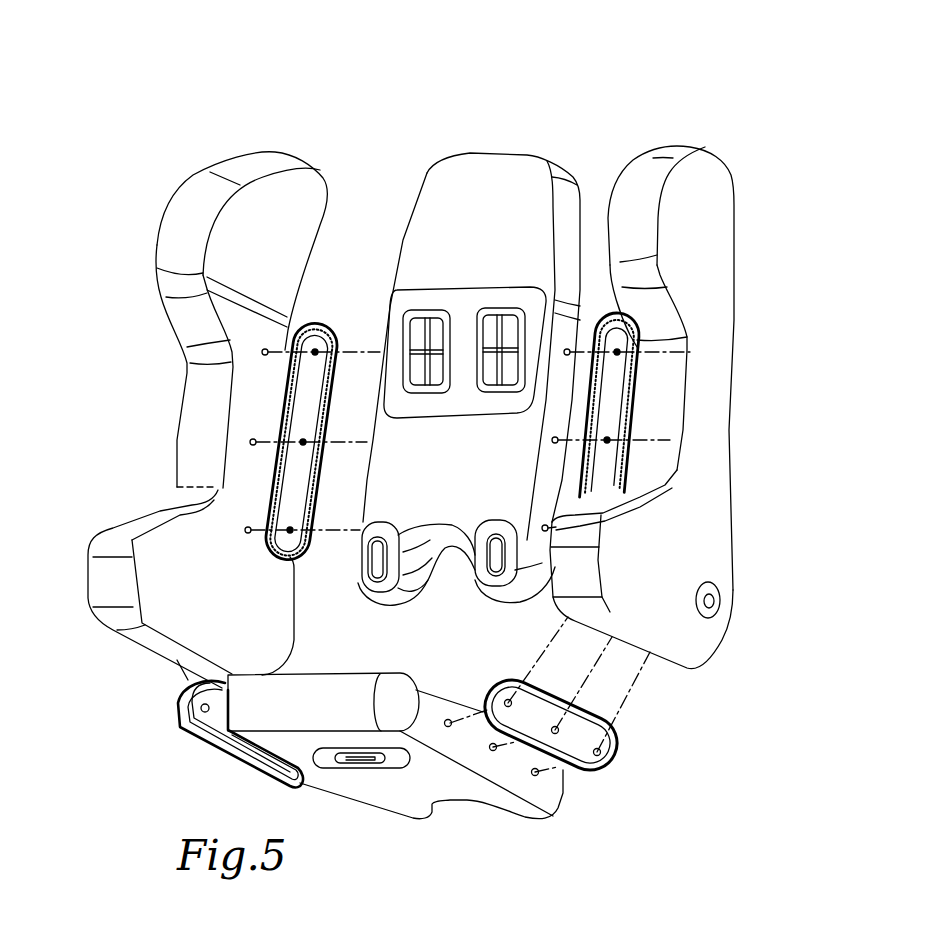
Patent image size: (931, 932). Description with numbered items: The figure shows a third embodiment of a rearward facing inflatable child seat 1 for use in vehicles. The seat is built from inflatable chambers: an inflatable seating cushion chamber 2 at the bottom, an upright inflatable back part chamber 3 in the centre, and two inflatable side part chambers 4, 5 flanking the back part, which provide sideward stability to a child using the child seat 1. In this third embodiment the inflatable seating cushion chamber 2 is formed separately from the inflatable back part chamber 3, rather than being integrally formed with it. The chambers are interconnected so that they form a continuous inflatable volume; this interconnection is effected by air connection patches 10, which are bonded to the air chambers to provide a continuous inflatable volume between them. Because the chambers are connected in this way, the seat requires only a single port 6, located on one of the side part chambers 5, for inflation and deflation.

The child seat 1 is at (690, 58).
The inflatable seating cushion chamber 2 is at (380, 783).
The inflatable back part chamber 3 is at (433, 242).
The inflatable side part chamber 4 is at (193, 237).
The inflatable side part chamber 5 is at (710, 377).
The port 6 is at (713, 603).
The air connection patch 10 is at (612, 778).